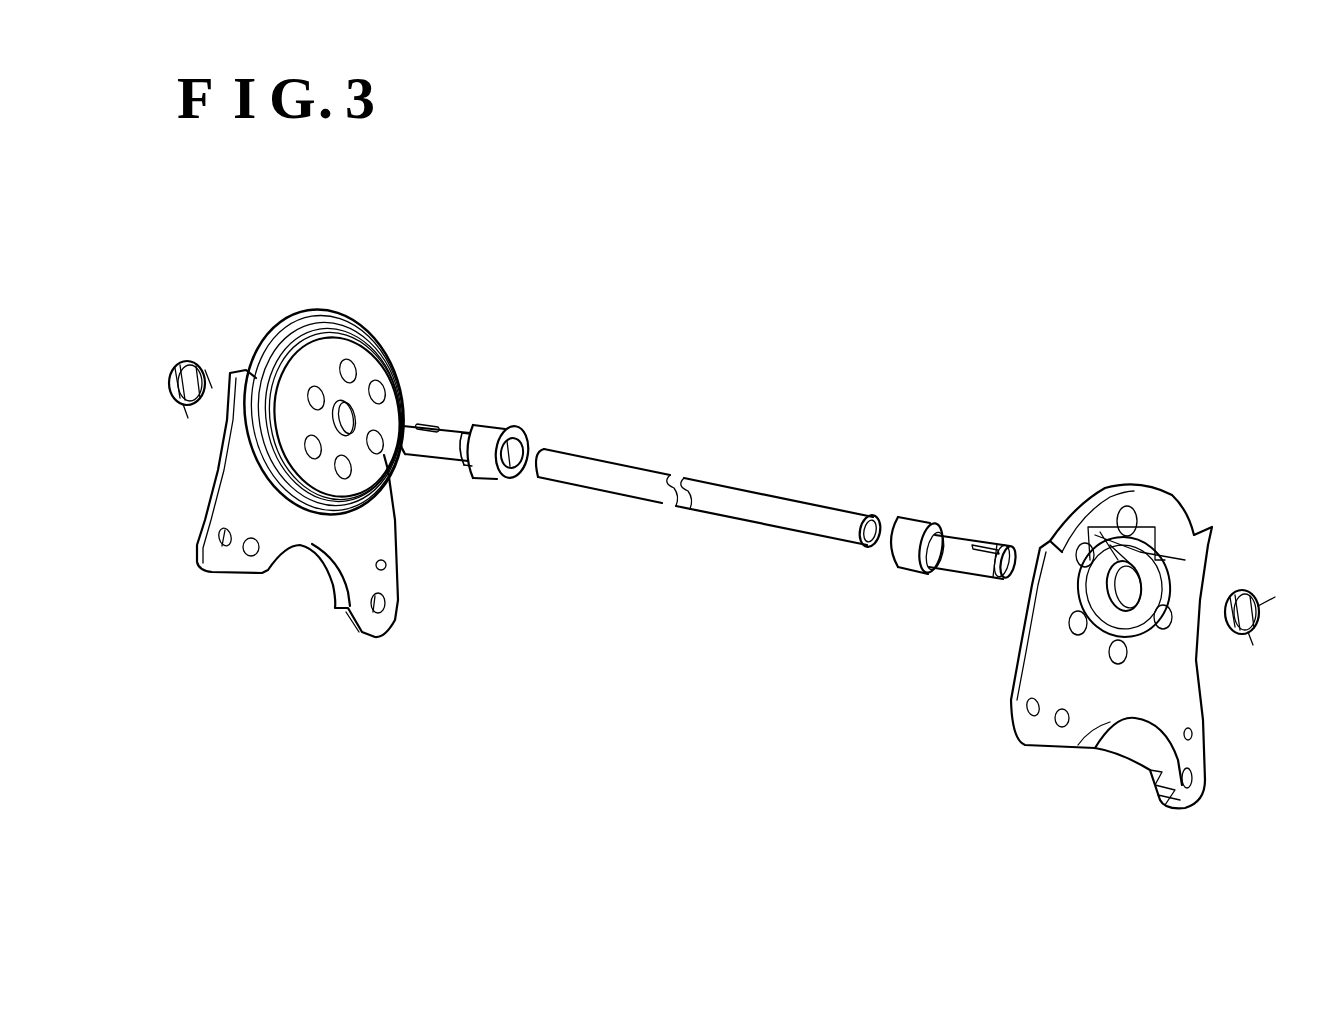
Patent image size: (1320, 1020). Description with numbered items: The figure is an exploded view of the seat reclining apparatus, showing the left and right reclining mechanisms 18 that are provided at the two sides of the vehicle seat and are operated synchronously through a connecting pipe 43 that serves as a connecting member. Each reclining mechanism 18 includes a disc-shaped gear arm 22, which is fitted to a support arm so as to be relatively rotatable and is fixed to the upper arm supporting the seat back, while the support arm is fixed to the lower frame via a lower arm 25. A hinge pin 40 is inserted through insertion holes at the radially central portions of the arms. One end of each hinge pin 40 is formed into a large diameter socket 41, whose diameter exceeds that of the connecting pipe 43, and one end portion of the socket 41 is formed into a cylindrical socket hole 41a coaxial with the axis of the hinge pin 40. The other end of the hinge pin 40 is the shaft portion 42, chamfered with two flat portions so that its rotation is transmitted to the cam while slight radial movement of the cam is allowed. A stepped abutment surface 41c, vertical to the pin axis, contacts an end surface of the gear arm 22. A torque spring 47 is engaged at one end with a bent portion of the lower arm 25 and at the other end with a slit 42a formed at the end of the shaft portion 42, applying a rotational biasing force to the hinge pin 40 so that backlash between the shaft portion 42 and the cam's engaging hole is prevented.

The reclining mechanism 18 is at (347, 295).
The gear arm 22 is at (326, 358).
The lower arm 25 is at (232, 495).
The hinge pin 40 is at (722, 489).
The socket 41 is at (497, 432).
The socket hole 41a is at (505, 458).
The abutment surface 41c is at (462, 466).
The shaft portion 42 is at (425, 452).
The slit 42a is at (418, 425).
The connecting pipe 43 is at (750, 498).
The torque spring 47 is at (165, 385).